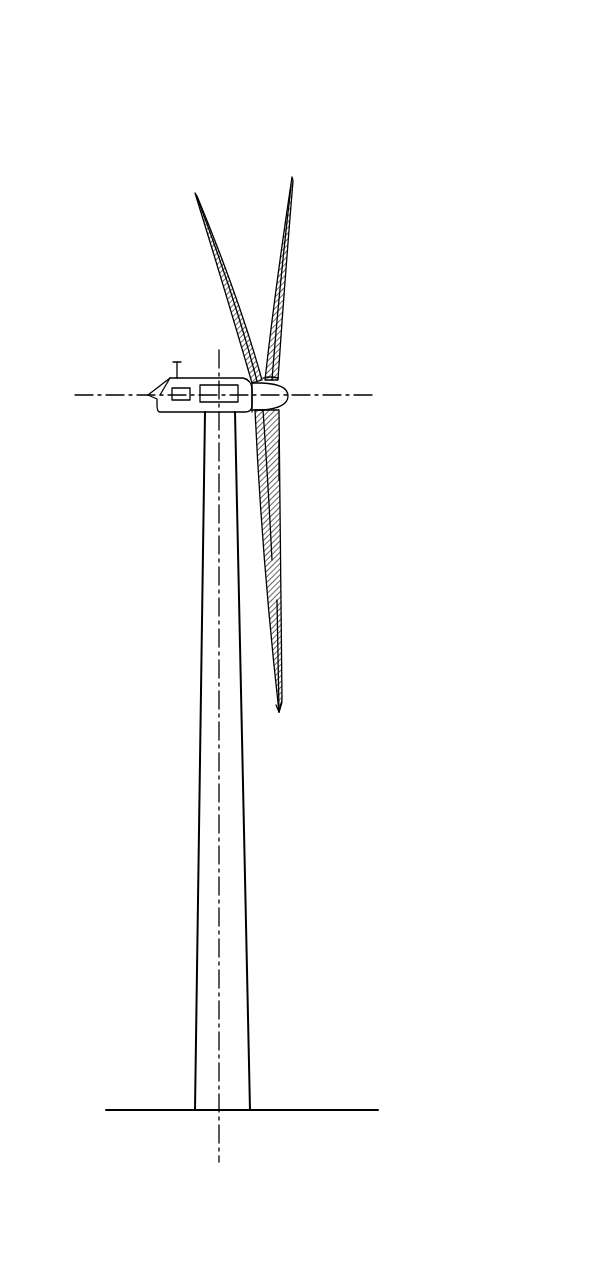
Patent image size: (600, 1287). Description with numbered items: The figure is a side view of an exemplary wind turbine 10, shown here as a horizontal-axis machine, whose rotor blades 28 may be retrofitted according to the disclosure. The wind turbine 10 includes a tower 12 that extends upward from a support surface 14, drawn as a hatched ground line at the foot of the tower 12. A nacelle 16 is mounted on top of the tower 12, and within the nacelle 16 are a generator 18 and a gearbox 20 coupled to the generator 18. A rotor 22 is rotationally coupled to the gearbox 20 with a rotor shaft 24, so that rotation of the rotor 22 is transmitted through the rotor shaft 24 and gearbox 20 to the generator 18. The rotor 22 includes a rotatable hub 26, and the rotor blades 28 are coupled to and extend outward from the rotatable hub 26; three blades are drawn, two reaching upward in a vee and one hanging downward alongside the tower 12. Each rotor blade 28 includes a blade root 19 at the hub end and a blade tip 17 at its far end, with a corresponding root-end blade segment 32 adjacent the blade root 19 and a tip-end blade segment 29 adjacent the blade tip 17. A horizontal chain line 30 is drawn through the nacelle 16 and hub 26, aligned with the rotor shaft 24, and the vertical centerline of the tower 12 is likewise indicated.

The wind turbine 10 is at (443, 78).
The tower 12 is at (198, 865).
The support surface 14 is at (150, 1108).
The nacelle 16 is at (170, 413).
The blade tip 17 is at (283, 710).
The generator 18 is at (176, 380).
The blade root 19 is at (275, 385).
The gearbox 20 is at (202, 380).
The rotor 22 is at (291, 384).
The rotor shaft 24 is at (250, 416).
The rotatable hub 26 is at (284, 404).
The rotor blade 28 is at (205, 250).
The tip-end blade segment 29 is at (278, 655).
The rotor axis 30 is at (355, 400).
The root-end blade segment 32 is at (286, 478).